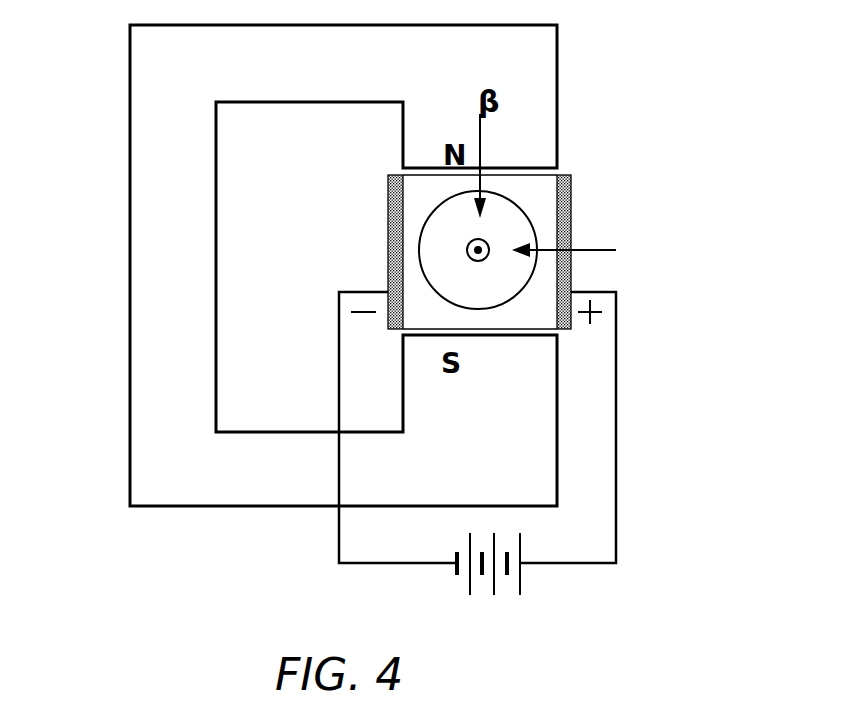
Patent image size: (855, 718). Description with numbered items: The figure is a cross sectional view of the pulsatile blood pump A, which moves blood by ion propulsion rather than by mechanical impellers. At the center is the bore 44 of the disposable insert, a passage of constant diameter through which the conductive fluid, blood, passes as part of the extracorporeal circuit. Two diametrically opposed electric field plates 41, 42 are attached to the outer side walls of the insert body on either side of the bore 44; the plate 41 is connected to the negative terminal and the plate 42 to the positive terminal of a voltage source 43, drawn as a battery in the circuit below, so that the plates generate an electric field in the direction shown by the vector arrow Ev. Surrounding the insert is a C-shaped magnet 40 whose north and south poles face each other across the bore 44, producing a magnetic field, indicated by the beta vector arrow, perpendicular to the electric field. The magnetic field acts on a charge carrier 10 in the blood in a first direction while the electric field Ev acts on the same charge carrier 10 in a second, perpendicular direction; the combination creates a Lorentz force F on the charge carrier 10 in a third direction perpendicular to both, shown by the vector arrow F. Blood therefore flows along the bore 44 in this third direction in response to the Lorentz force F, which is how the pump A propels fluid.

The charge carrier 10 is at (489, 241).
The "C" shaped magnet 40 is at (130, 175).
The electric field plate 41 is at (388, 176).
The electric field plate 42 is at (571, 223).
The voltage source 43 is at (520, 595).
The bore 44 is at (497, 297).
The electric field vector arrow Ev is at (588, 252).
The Lorentz force F is at (489, 257).
The pulsatile blood pump A is at (670, 207).